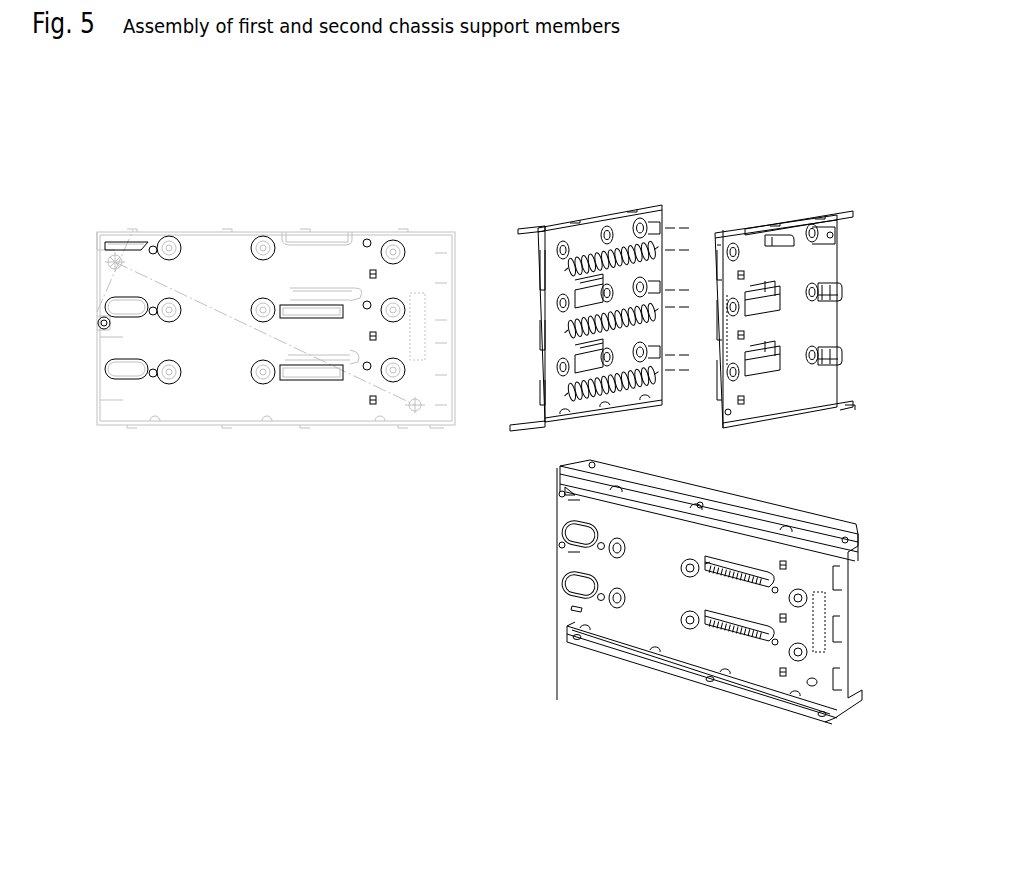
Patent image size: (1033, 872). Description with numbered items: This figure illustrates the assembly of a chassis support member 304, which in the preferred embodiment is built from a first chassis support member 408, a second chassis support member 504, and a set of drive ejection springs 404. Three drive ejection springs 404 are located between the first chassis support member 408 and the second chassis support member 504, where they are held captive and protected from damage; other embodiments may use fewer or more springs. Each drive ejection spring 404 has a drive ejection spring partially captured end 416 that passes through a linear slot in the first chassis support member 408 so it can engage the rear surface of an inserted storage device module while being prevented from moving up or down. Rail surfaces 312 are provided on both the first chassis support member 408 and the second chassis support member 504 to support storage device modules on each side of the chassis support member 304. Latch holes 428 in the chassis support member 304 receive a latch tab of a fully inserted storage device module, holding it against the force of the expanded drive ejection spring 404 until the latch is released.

The chassis support member 304 is at (835, 712).
The rail surface 312 is at (725, 562).
The drive ejection spring 404 is at (628, 238).
The first chassis support member 408 is at (212, 232).
The drive ejection spring partially captured end 416 is at (560, 614).
The latch hole 428 is at (440, 318).
The second chassis support member 504 is at (803, 217).